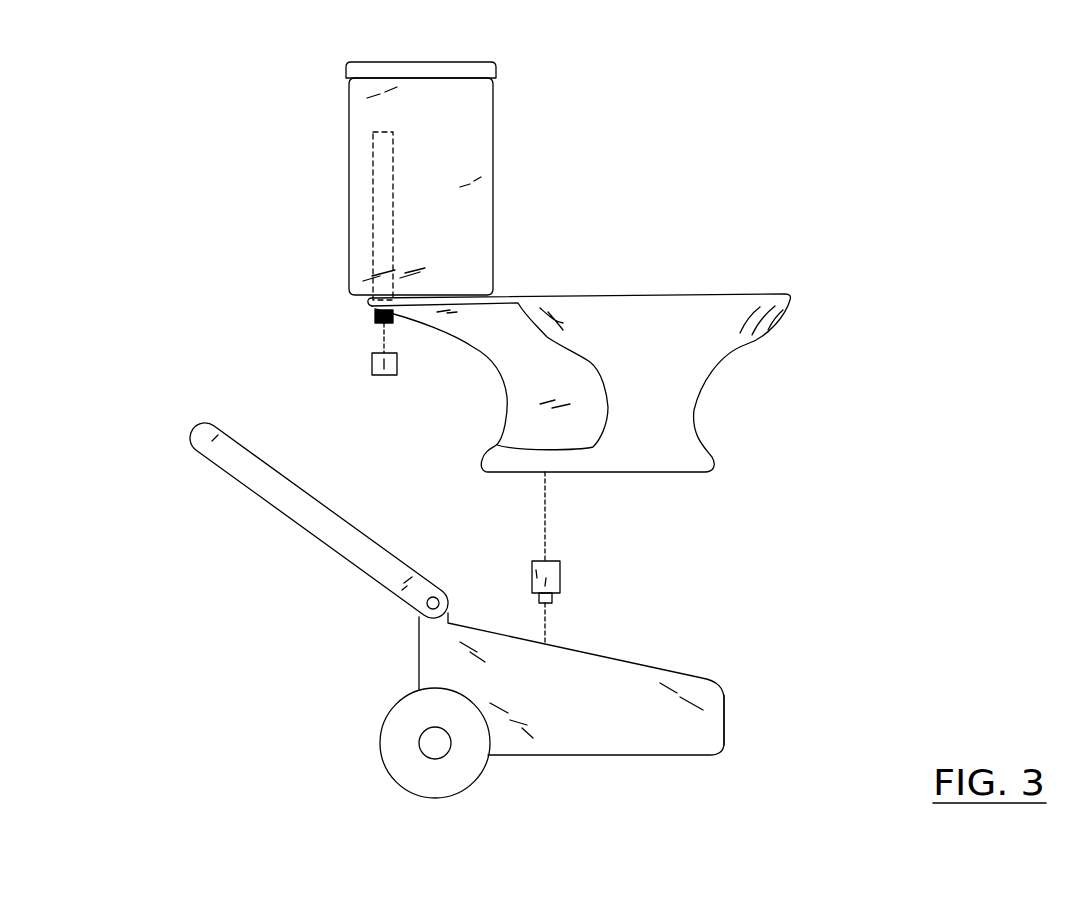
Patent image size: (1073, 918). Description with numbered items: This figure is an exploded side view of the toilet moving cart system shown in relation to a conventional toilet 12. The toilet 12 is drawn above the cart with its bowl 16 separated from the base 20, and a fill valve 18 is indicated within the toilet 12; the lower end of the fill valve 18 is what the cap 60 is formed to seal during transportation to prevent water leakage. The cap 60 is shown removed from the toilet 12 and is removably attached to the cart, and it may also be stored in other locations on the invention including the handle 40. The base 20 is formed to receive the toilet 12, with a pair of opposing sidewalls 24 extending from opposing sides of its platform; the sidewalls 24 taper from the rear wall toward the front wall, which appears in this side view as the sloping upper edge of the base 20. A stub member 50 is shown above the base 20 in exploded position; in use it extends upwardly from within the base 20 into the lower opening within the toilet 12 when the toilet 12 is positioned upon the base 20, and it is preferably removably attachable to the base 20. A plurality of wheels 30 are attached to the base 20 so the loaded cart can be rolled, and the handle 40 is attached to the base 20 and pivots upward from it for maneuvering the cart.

The toilet 12 is at (495, 150).
The bowl 16 is at (663, 310).
The fill valve 18 is at (380, 147).
The base 20 is at (702, 678).
The sidewalls 24 is at (708, 720).
The wheels 30 is at (395, 747).
The handle 40 is at (348, 535).
The stub member 50 is at (553, 579).
The cap 60 is at (378, 367).